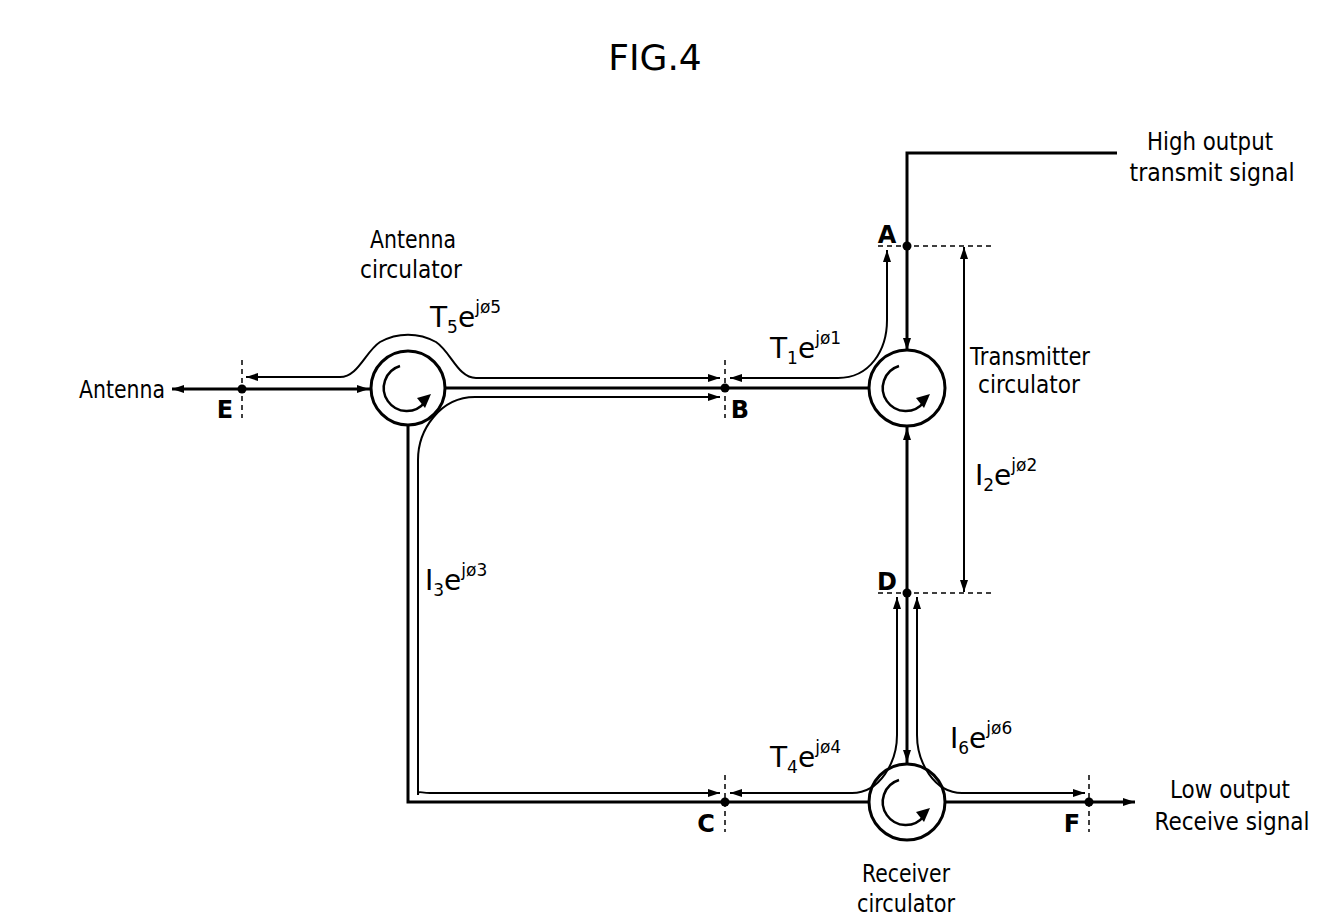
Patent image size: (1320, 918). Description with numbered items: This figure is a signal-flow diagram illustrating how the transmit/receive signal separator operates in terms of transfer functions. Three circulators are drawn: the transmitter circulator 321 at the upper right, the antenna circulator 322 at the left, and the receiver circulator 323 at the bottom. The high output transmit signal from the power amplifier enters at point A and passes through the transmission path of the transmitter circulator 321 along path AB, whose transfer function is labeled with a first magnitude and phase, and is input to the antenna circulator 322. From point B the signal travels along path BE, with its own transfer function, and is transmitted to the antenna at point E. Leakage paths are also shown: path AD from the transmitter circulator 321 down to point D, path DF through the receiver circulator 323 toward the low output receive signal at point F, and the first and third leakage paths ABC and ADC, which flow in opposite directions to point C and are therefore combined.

The transmitter circulator 321 is at (874, 414).
The antenna circulator 322 is at (378, 414).
The receiver circulator 323 is at (874, 830).